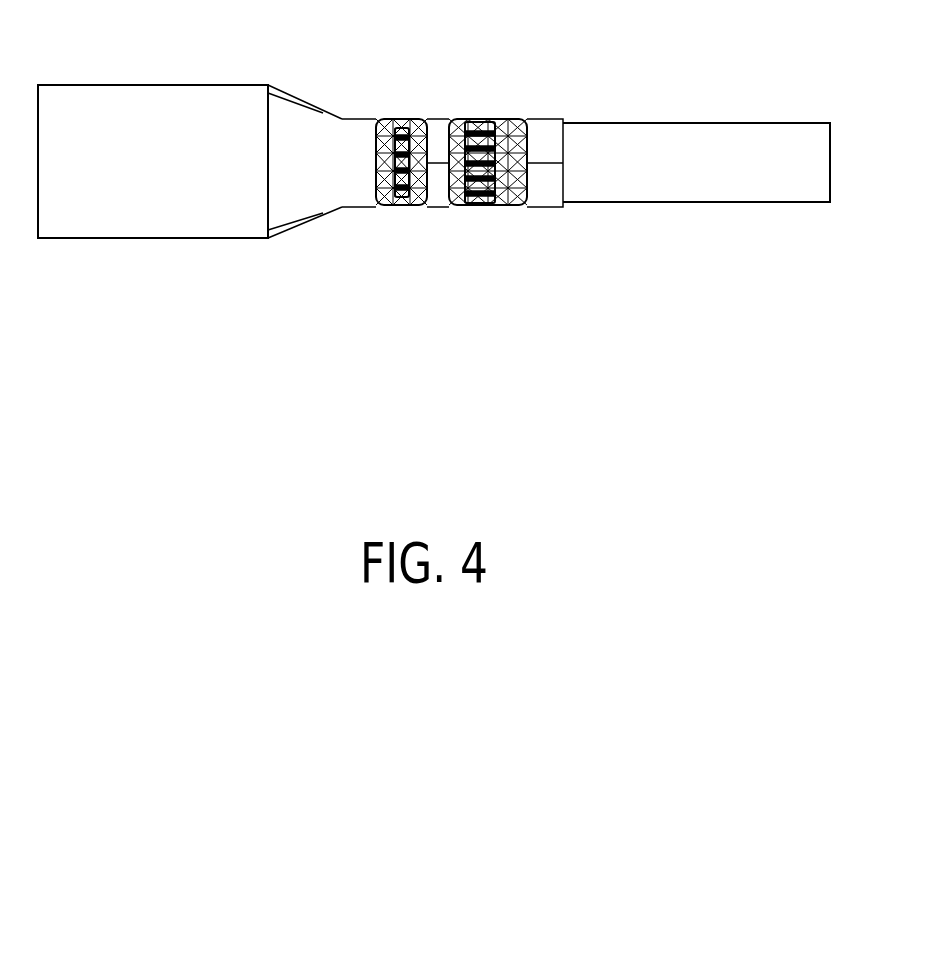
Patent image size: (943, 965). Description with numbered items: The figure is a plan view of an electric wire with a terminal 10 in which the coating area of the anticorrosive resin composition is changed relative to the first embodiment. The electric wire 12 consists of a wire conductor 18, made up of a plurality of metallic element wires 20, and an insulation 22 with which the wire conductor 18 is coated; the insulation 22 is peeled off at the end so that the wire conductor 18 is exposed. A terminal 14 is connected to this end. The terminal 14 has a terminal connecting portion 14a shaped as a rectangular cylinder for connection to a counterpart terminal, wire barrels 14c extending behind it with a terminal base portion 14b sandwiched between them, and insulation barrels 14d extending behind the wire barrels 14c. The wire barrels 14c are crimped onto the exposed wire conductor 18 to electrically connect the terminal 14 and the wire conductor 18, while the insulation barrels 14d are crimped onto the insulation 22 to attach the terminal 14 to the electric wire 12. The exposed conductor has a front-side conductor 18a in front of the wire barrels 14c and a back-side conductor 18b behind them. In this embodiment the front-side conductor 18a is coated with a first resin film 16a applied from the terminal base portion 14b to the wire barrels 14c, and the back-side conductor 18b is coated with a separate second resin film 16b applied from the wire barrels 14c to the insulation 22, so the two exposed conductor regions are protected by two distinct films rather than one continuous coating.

The electric wire with a terminal 10 is at (820, 325).
The electric wire 12 is at (690, 121).
The terminal 14 is at (152, 84).
The terminal connecting portion 14a is at (155, 240).
The terminal base portion 14b is at (362, 208).
The wire barrels 14c is at (440, 208).
The insulation barrels 14d is at (543, 208).
The first resin film 16a is at (388, 118).
The second resin film 16b is at (453, 118).
The wire conductor 18 is at (430, 162).
The front-side conductor 18a is at (405, 208).
The back-side conductor 18b is at (478, 208).
The metallic element wires 20 is at (397, 118).
The insulation 22 is at (498, 118).